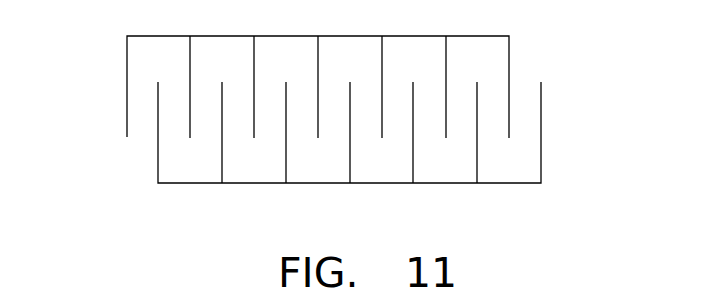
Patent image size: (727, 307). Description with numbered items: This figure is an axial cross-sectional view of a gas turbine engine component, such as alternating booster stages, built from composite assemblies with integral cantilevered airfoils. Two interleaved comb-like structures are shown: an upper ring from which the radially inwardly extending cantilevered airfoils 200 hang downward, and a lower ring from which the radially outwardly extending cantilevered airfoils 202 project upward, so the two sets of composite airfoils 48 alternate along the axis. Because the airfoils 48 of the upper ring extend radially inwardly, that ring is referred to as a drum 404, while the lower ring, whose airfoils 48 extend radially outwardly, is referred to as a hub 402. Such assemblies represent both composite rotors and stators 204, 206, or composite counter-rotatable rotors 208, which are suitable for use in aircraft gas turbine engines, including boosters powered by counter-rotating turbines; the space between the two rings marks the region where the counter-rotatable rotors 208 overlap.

The radially inwardly extending cantilevered airfoils 200 is at (509, 52).
The radially outwardly extending cantilevered airfoils 202 is at (541, 133).
The composite rotor 204 is at (173, 36).
The composite stator 206 is at (331, 36).
The composite counter-rotatable rotors 208 is at (158, 156).
The composite airfoils 48 is at (509, 79).
The drum 404 is at (462, 36).
The hub 402 is at (515, 183).